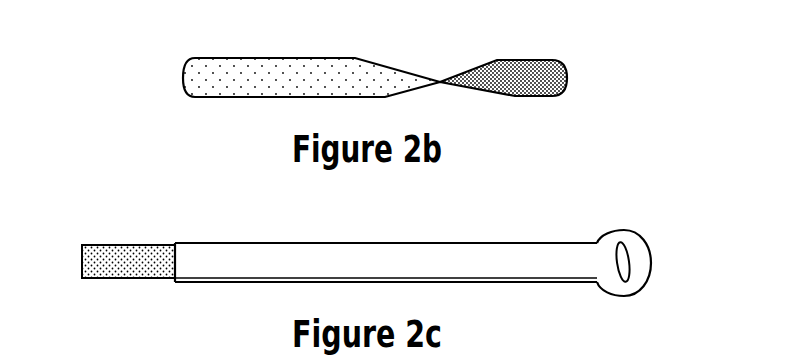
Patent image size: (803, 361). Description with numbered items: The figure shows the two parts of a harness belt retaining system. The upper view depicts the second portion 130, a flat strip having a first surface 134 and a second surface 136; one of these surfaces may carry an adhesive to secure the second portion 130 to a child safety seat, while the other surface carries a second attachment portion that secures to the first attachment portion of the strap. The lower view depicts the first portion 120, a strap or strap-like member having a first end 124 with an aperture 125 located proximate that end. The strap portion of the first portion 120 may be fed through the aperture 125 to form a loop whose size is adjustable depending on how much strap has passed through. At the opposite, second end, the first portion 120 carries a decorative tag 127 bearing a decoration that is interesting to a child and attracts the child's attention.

In FIG. 2B, the second portion 130 is at (618, 34).
In FIG. 2B, the first surface 134 is at (208, 78).
In FIG. 2B, the second surface 136 is at (517, 85).
In FIG. 2C, the first portion 120 is at (676, 189).
In FIG. 2C, the decorative tag 127 is at (100, 280).
In FIG. 2C, the first end 124 is at (648, 252).
In FIG. 2C, the aperture 125 is at (622, 260).